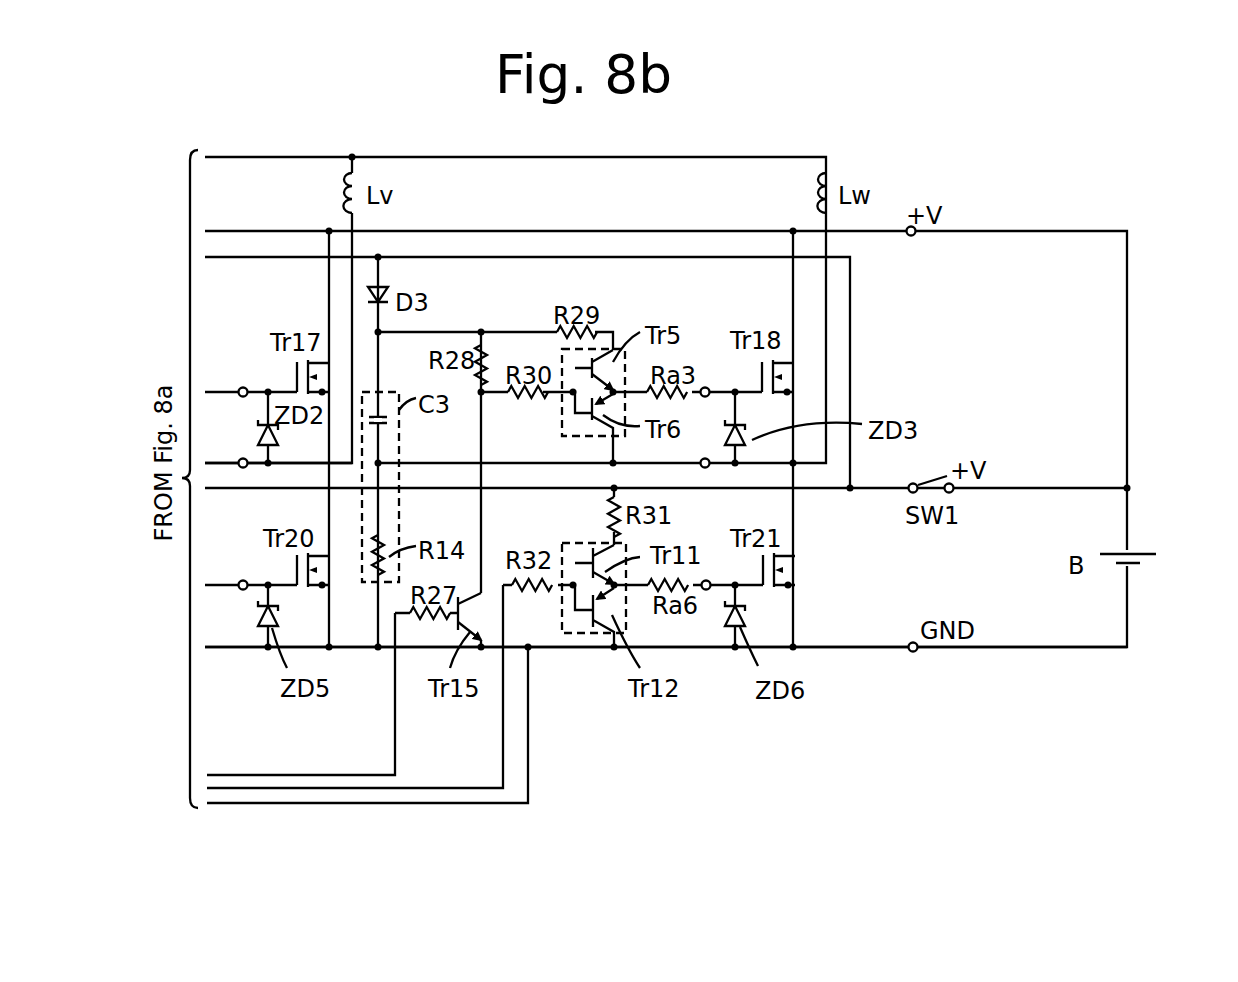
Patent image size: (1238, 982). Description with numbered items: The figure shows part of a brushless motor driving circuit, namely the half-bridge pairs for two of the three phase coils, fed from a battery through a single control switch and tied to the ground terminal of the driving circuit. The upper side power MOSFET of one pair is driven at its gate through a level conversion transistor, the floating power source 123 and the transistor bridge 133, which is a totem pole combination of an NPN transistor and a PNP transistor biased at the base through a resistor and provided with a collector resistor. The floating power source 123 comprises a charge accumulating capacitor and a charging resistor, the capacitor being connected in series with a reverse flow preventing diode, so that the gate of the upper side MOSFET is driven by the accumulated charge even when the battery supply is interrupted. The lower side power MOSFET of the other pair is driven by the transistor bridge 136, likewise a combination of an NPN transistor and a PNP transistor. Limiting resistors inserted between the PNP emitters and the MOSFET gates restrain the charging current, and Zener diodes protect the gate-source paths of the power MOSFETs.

The floating power source 123 is at (399, 449).
The transistor bridge 133 is at (562, 413).
The transistor bridge 136 is at (562, 611).